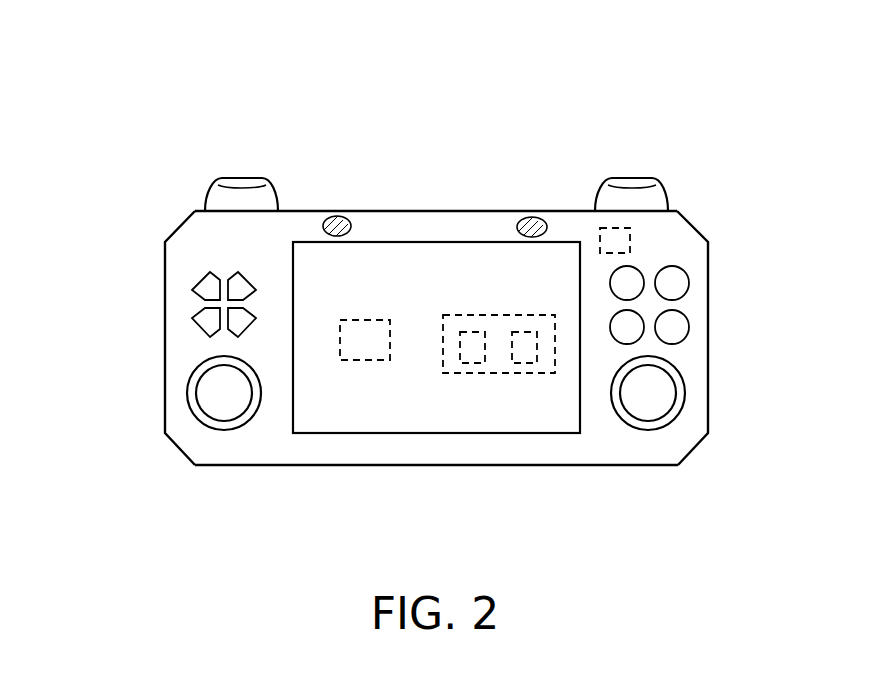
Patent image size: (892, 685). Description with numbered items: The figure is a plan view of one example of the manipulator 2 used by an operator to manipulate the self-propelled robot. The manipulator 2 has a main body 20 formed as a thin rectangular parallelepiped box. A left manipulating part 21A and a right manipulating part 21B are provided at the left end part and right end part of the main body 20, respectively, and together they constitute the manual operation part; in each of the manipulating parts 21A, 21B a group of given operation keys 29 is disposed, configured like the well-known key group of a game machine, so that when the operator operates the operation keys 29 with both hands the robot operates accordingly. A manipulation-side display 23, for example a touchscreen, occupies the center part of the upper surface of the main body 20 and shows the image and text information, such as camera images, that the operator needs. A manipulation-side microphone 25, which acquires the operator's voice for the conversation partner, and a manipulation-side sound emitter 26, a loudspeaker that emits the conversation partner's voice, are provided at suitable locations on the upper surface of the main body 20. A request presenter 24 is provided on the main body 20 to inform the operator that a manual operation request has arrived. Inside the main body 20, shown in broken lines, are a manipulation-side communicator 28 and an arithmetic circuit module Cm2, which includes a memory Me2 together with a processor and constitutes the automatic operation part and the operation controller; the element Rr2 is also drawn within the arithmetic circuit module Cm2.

The manipulator 2 is at (293, 108).
The main body 20 is at (567, 210).
The left manipulating part 21A is at (170, 213).
The right manipulating part 21B is at (700, 213).
The manipulation-side display 23 is at (426, 270).
The request presenter 24 is at (630, 240).
The manipulation-side microphone 25 is at (336, 215).
The manipulation-side sound emitter 26 is at (528, 216).
The manipulation-side communicator 28 is at (367, 360).
The operation keys 29 is at (240, 178).
The arithmetic circuit module Cm2 is at (443, 343).
The reception unit Rr2 is at (472, 363).
The memory Me2 is at (525, 363).